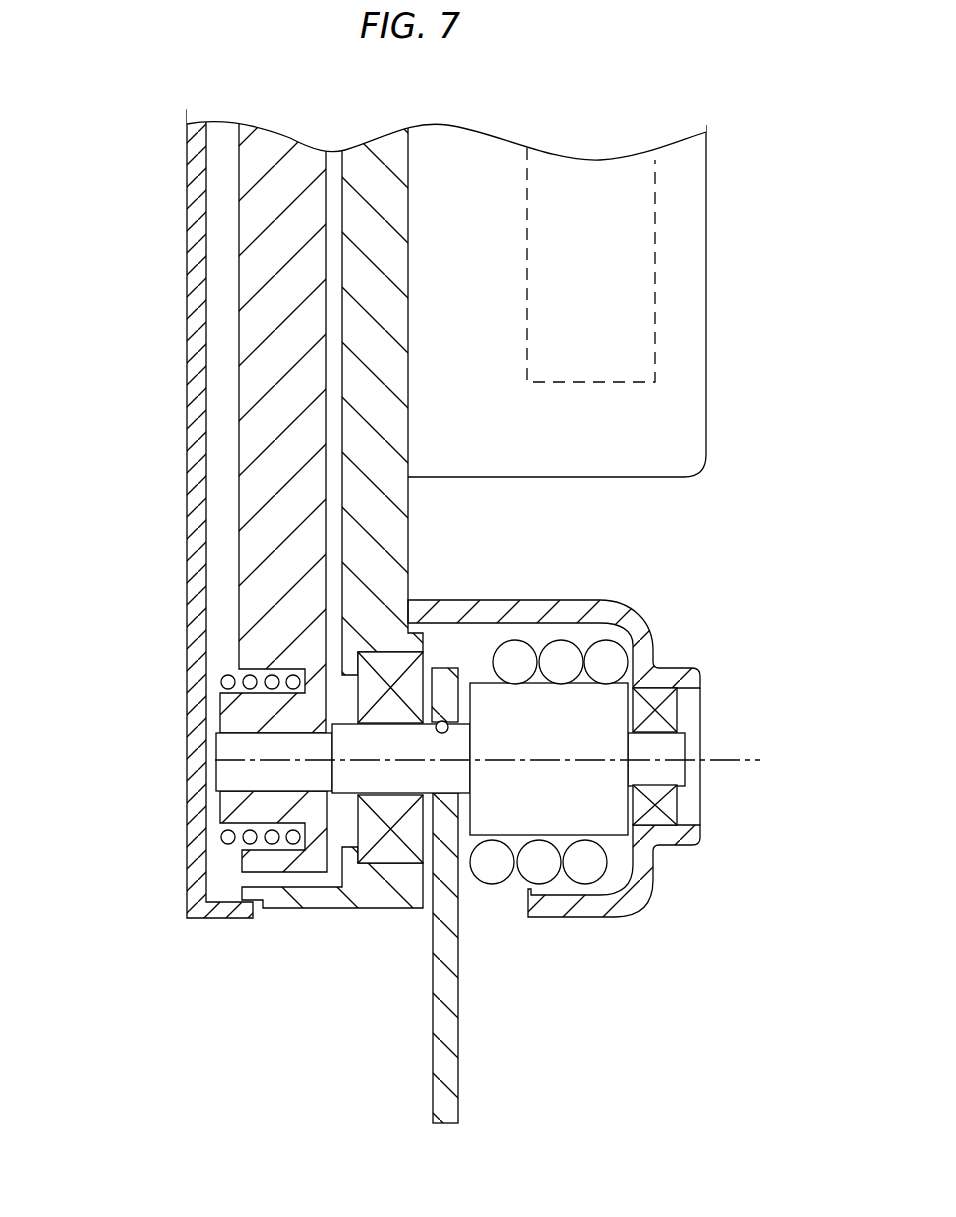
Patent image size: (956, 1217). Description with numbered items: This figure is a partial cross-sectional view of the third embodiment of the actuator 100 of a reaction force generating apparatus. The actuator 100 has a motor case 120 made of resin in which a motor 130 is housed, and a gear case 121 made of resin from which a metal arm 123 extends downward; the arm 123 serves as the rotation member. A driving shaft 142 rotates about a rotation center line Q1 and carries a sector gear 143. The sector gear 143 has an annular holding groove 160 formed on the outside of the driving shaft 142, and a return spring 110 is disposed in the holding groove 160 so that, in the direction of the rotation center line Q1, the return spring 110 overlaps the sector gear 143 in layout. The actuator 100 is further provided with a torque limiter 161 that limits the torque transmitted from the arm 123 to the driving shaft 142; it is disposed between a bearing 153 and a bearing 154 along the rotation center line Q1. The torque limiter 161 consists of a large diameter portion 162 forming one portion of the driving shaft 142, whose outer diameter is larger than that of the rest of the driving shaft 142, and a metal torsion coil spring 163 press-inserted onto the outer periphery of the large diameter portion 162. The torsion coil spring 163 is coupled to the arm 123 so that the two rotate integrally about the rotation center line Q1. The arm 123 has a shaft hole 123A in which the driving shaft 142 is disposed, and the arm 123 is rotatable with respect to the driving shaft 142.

The actuator 100 is at (188, 940).
The return spring 110 is at (215, 682).
The motor case 120 is at (667, 428).
The gear case 121 is at (187, 476).
The arm 123 is at (445, 1087).
The shaft hole 123A is at (442, 718).
The motor 130 is at (665, 237).
The driving shaft 142 is at (216, 745).
The sector gear 143 is at (257, 308).
The bearing 153 is at (665, 805).
The bearing 154 is at (390, 848).
The holding groove 160 is at (247, 845).
The torque limiter 161 is at (502, 903).
The large diameter portion 162 is at (482, 690).
The torsion coil spring 163 is at (603, 640).
The rotation center line Q1 is at (760, 752).